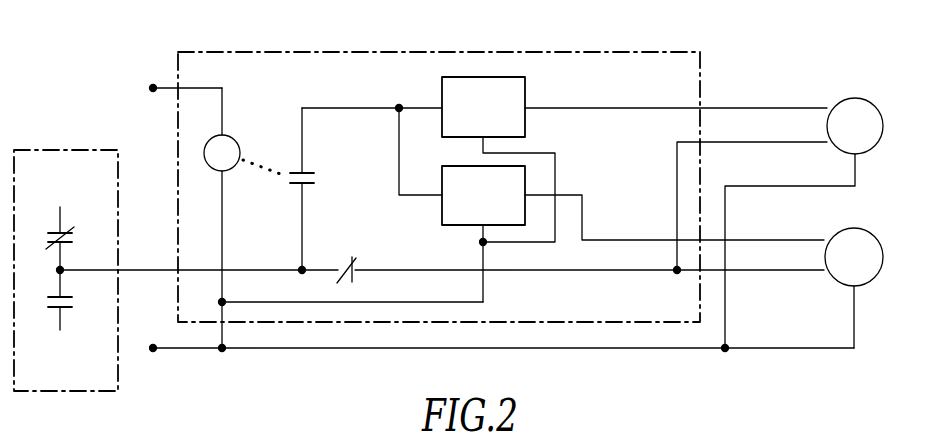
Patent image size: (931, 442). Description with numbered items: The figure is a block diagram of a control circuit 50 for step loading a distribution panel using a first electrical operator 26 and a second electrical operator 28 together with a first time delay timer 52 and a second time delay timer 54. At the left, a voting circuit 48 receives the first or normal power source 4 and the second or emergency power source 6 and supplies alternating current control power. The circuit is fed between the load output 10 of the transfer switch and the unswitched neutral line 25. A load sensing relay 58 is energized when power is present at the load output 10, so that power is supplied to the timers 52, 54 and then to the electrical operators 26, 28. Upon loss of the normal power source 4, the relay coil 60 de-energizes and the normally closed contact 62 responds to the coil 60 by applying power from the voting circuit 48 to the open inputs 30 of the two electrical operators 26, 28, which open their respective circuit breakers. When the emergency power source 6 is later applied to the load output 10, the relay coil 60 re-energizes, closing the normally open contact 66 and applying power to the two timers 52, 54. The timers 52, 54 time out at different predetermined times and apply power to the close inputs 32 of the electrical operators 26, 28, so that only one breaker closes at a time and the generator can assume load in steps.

The voting circuit 48 is at (66, 242).
The first power source 4 is at (58, 213).
The second power source 6 is at (58, 322).
The load output 10 is at (164, 92).
The neutral line 25 is at (195, 350).
The control circuit 50 is at (688, 52).
The first time delay timer 52 is at (441, 89).
The second time delay timer 54 is at (441, 212).
The load sensing relay 58 is at (237, 130).
The relay coil 60 is at (237, 169).
The normally closed contact 62 is at (354, 266).
The normally open contact 66 is at (310, 171).
The first electrical operator 26 is at (873, 150).
The second electrical operator 28 is at (873, 283).
The open input 30 is at (828, 146).
The close input 32 is at (825, 106).